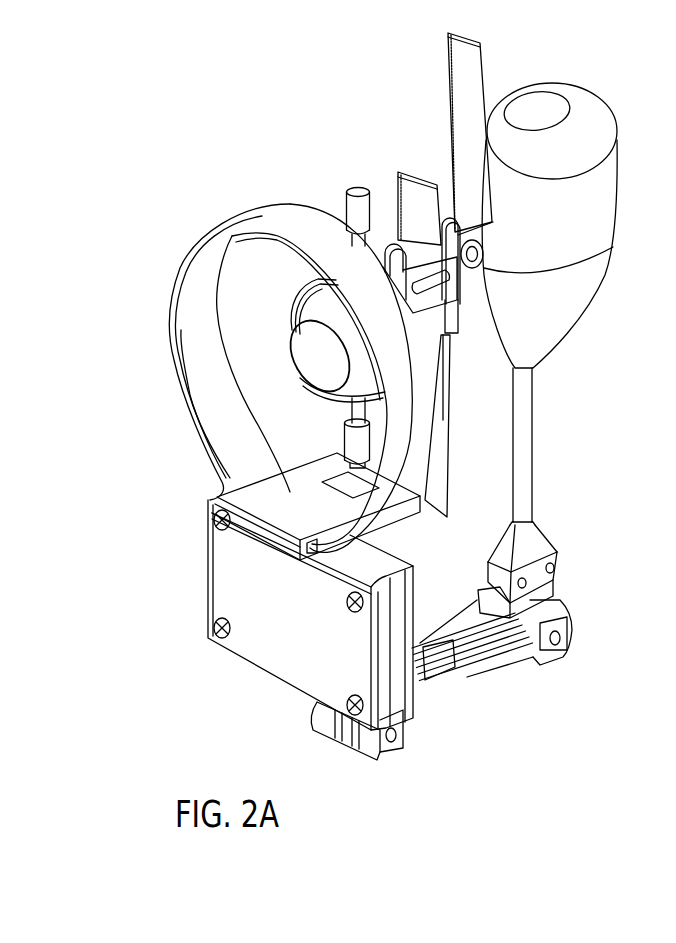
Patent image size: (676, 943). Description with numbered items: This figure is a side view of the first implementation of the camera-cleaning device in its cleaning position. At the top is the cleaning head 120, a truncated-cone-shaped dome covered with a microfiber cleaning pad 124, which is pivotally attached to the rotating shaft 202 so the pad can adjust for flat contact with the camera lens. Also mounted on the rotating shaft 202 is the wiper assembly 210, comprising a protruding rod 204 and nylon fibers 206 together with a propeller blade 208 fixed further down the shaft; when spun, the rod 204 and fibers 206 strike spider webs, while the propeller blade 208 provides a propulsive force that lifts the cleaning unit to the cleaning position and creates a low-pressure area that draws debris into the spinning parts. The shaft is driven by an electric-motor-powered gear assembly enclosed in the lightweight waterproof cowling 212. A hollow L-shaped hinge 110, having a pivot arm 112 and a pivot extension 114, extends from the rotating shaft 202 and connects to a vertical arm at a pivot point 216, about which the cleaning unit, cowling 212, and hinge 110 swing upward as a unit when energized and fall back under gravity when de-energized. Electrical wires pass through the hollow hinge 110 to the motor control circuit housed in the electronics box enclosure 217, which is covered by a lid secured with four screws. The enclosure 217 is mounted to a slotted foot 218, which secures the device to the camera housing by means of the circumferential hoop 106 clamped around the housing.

The circumferential hoop 106 is at (247, 213).
The cleaning head 120 is at (297, 300).
The cleaning pad 124 is at (307, 345).
The protruding rod 204 is at (347, 193).
The nylon fibers 206 is at (398, 167).
The propeller blade 208 is at (447, 113).
The wiper assembly 210 is at (307, 137).
The rotating shaft 202 is at (425, 287).
The waterproof cowling 212 is at (610, 127).
The pivot extension 114 is at (533, 473).
The pivot arm 112 is at (455, 688).
The L-shaped hinge 110 is at (610, 457).
The slotted foot 218 is at (290, 503).
The electronics box enclosure 217 is at (275, 642).
The pivot point 216 is at (382, 752).